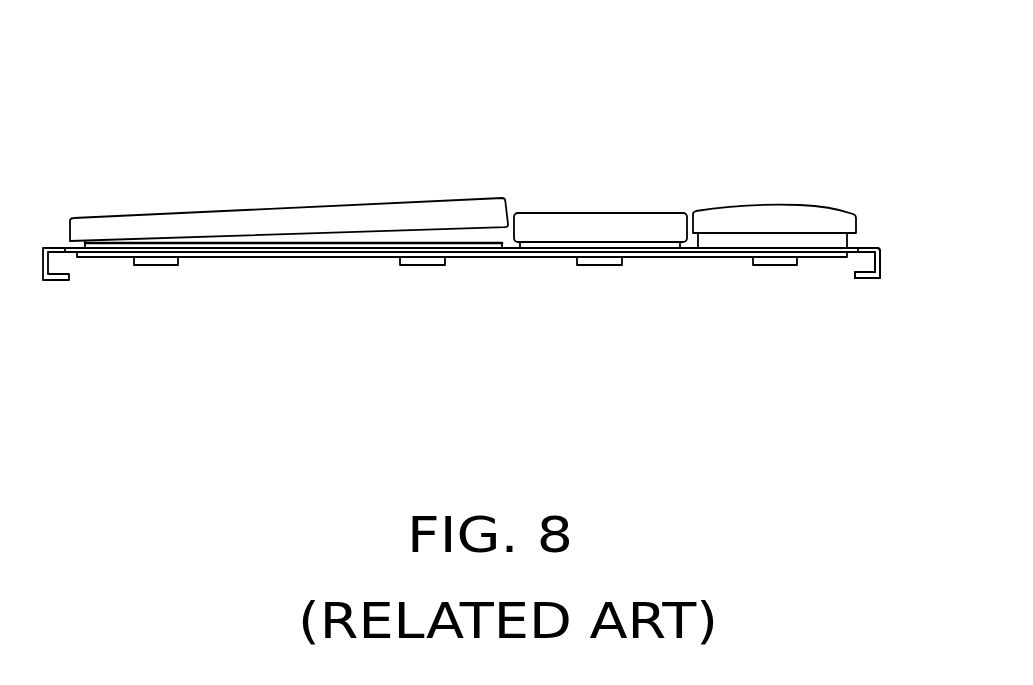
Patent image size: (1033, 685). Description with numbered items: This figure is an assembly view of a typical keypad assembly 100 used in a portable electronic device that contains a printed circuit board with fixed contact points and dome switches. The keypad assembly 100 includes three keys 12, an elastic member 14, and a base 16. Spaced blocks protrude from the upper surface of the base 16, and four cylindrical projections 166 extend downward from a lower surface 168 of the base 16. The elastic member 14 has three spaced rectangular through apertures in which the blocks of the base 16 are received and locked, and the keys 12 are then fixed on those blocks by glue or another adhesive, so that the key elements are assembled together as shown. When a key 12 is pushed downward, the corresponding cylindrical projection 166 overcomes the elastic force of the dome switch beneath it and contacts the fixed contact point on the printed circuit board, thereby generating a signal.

The keypad assembly 100 is at (502, 52).
The key 12 is at (599, 228).
The elastic member 14 is at (865, 248).
The base 16 is at (322, 256).
The cylindrical projection 166 is at (153, 265).
The lower surface 168 is at (549, 258).